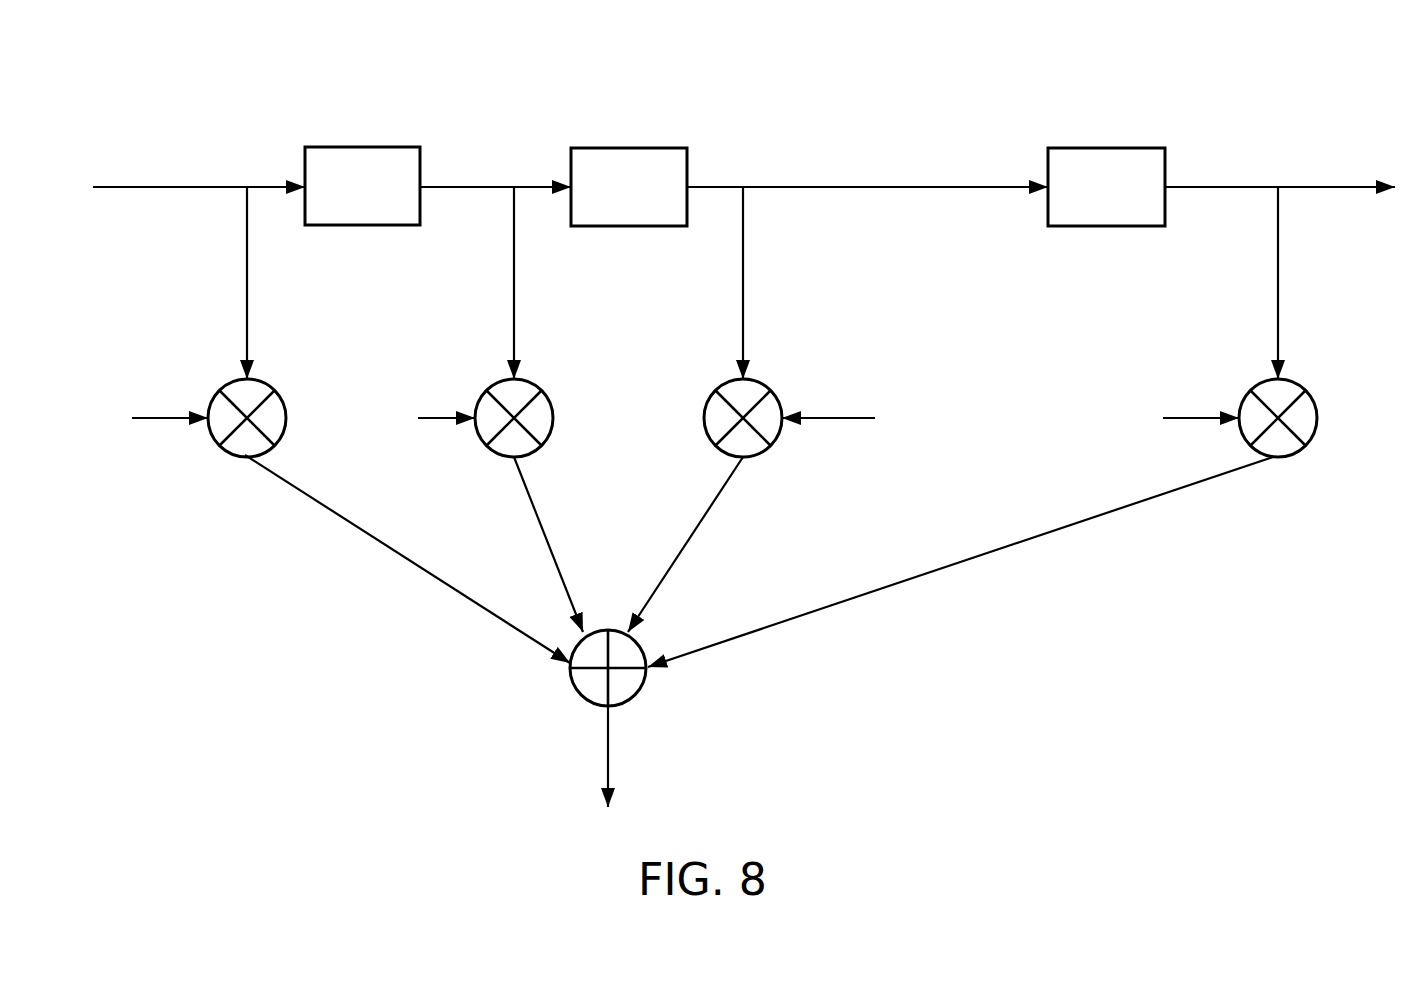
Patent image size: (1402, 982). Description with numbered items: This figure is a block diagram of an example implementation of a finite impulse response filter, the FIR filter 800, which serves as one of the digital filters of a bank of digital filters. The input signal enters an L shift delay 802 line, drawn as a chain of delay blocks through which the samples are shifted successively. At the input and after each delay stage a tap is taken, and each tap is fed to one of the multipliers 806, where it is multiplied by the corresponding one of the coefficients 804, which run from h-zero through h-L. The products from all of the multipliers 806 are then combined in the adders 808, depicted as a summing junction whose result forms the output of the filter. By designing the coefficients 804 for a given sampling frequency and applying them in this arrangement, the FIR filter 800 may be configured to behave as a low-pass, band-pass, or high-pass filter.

The FIR filter 800 is at (858, 110).
The L shift delay line 802 is at (382, 147).
The coefficients 804 is at (141, 427).
The multipliers 806 is at (227, 455).
The adders 808 is at (578, 695).